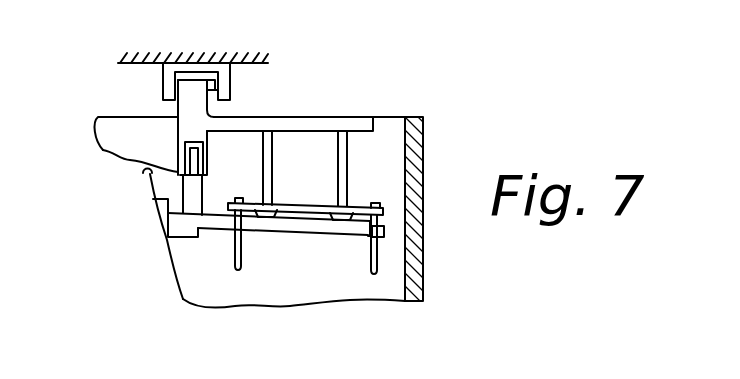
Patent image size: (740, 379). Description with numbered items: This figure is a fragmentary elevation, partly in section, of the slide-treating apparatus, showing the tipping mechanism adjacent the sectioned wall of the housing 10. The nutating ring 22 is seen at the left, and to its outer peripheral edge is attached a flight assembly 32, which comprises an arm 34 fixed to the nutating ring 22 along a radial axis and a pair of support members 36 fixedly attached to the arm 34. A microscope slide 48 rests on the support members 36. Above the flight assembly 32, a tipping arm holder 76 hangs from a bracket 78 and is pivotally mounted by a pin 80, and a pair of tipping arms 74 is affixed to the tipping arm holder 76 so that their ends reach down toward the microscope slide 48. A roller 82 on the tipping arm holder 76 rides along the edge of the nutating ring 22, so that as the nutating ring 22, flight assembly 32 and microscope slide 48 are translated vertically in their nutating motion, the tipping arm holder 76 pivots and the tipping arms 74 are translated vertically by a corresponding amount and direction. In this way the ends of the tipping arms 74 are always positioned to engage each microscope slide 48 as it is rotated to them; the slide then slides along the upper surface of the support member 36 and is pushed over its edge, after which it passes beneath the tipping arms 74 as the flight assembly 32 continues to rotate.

The housing 10 is at (423, 263).
The nutating ring 22 is at (143, 175).
The flight assembly 32 is at (287, 240).
The arm 34 is at (215, 212).
The support member 36 is at (369, 262).
The microscope slide 48 is at (367, 203).
The tipping arms 74 is at (338, 167).
The tipping arm holder 76 is at (335, 117).
The bracket 78 is at (230, 89).
The pin 80 is at (176, 86).
The roller 82 is at (128, 158).